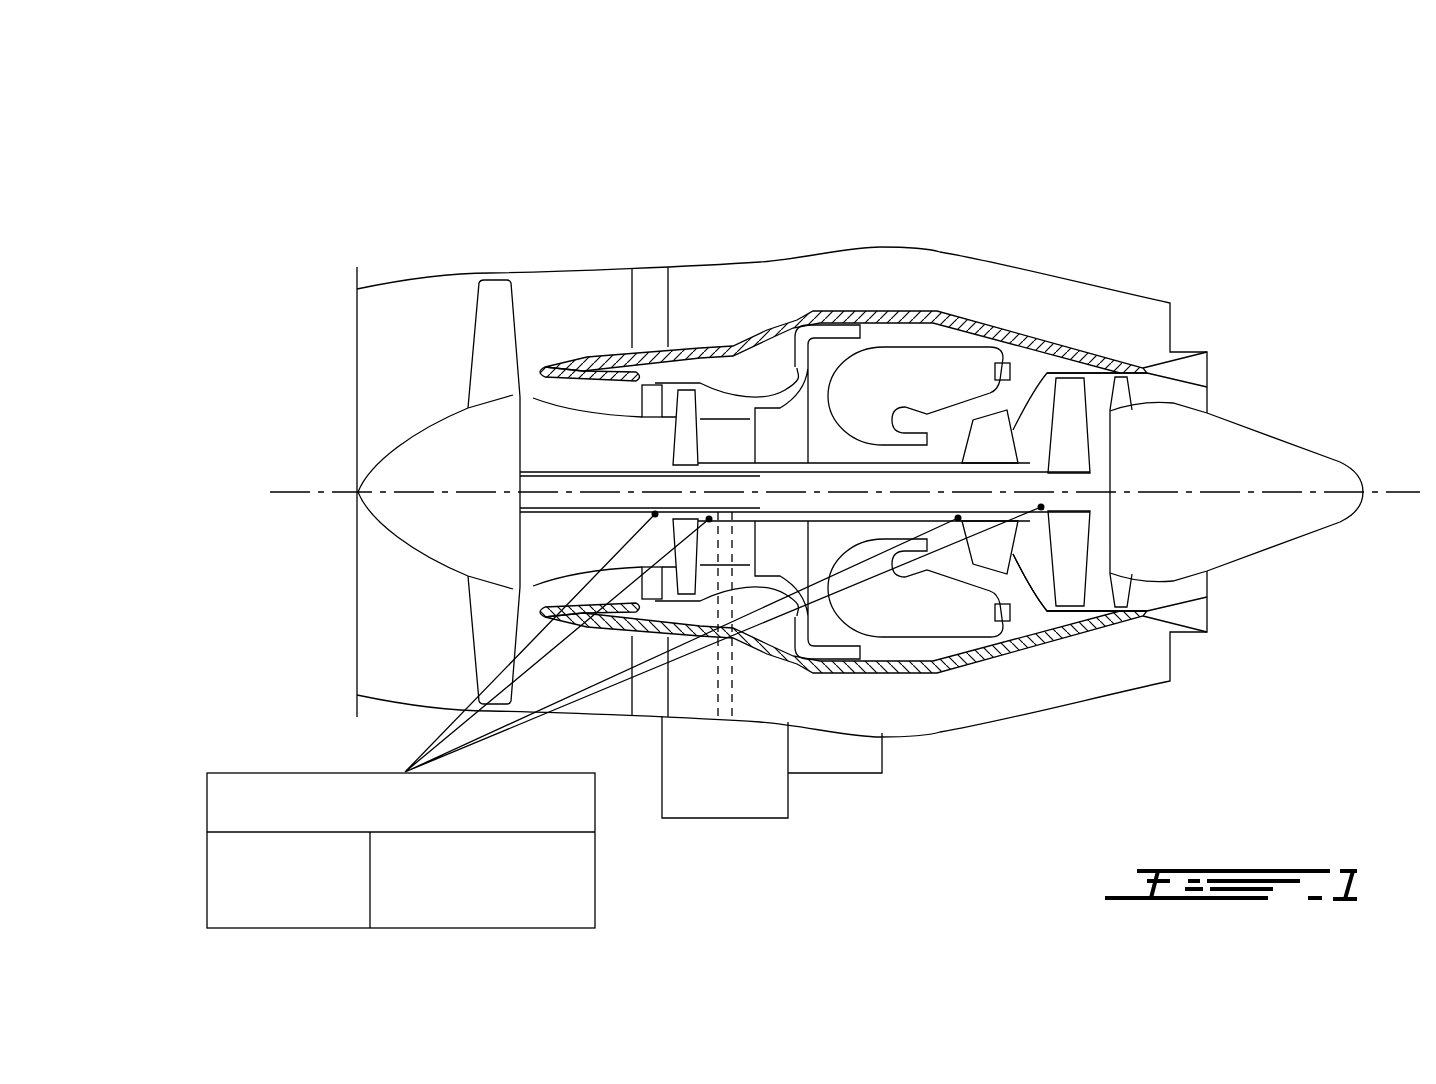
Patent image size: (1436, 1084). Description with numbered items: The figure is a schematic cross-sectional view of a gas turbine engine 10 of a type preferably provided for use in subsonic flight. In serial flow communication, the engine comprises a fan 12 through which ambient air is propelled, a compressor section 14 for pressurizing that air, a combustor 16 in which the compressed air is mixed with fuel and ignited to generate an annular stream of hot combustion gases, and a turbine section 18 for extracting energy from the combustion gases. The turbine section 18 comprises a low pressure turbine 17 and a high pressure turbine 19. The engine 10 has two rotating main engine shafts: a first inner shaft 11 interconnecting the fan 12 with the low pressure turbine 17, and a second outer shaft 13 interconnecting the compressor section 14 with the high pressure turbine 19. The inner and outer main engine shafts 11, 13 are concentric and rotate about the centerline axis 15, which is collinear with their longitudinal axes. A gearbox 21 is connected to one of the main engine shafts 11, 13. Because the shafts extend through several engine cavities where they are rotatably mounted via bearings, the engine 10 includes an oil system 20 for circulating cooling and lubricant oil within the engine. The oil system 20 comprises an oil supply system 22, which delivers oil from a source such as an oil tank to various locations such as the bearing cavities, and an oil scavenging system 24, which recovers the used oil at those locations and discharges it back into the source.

The gas turbine engine 10 is at (1078, 158).
The first inner shaft 11 is at (1018, 422).
The fan 12 is at (487, 629).
The second outer shaft 13 is at (913, 457).
The compressor section 14 is at (717, 402).
The centerline axis 15 is at (1395, 490).
The combustor 16 is at (887, 373).
The low pressure turbine 17 is at (1072, 397).
The turbine section 18 is at (1028, 553).
The high pressure turbine 19 is at (988, 433).
The oil system 20 is at (247, 773).
The gearbox 21 is at (733, 800).
The oil supply system 22 is at (207, 879).
The oil scavenging system 24 is at (595, 880).